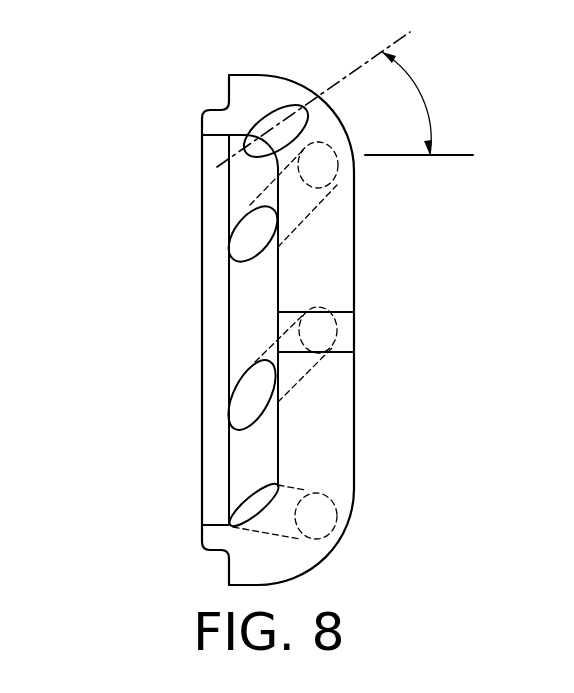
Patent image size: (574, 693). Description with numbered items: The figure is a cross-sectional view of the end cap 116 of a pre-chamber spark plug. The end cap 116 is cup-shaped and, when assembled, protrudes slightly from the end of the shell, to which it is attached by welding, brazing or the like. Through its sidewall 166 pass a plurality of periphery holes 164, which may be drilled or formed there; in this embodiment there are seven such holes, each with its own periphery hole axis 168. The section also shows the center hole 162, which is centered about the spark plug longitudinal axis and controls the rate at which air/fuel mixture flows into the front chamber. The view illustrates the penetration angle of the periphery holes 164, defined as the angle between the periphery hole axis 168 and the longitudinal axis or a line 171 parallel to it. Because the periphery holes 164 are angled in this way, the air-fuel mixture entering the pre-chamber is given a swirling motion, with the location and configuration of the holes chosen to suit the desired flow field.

The end cap 116 is at (134, 104).
The center hole 162 is at (384, 330).
The periphery holes 164 is at (243, 226).
The sidewall 166 is at (250, 75).
The periphery hole axis 168 is at (365, 62).
The line parallel to the longitudinal axis 171 is at (458, 157).